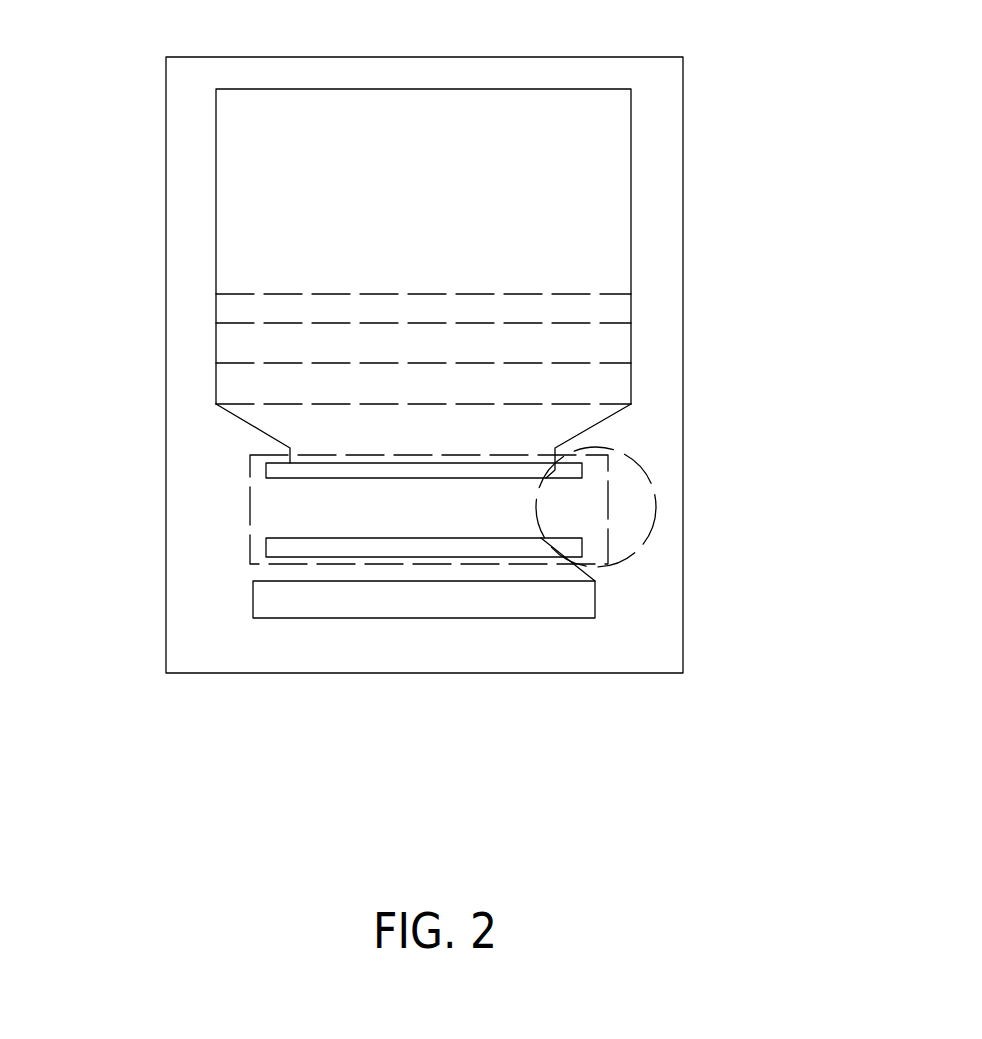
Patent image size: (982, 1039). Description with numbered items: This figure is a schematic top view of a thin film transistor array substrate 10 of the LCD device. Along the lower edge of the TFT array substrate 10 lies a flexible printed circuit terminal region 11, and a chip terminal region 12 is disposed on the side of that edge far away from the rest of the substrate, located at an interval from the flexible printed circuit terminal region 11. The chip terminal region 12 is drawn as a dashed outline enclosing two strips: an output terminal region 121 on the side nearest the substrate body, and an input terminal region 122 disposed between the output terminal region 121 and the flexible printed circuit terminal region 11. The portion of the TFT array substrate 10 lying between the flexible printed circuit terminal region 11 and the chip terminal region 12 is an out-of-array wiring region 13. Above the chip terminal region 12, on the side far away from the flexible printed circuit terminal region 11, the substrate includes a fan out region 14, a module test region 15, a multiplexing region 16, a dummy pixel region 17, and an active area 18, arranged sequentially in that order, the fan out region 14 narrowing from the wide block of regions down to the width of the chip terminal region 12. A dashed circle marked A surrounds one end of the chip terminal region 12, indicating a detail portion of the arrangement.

The TFT array substrate 10 is at (683, 107).
The flexible printed circuit terminal region 11 is at (558, 605).
The chip terminal region 12 is at (250, 510).
The output terminal region 121 is at (266, 465).
The input terminal region 122 is at (275, 558).
The out-of-array wiring region 13 is at (262, 578).
The fan out region 14 is at (263, 433).
The module test region 15 is at (216, 380).
The multiplexing region 16 is at (221, 341).
The dummy pixel region 17 is at (216, 308).
The active area 18 is at (216, 245).
The detail region A is at (645, 548).